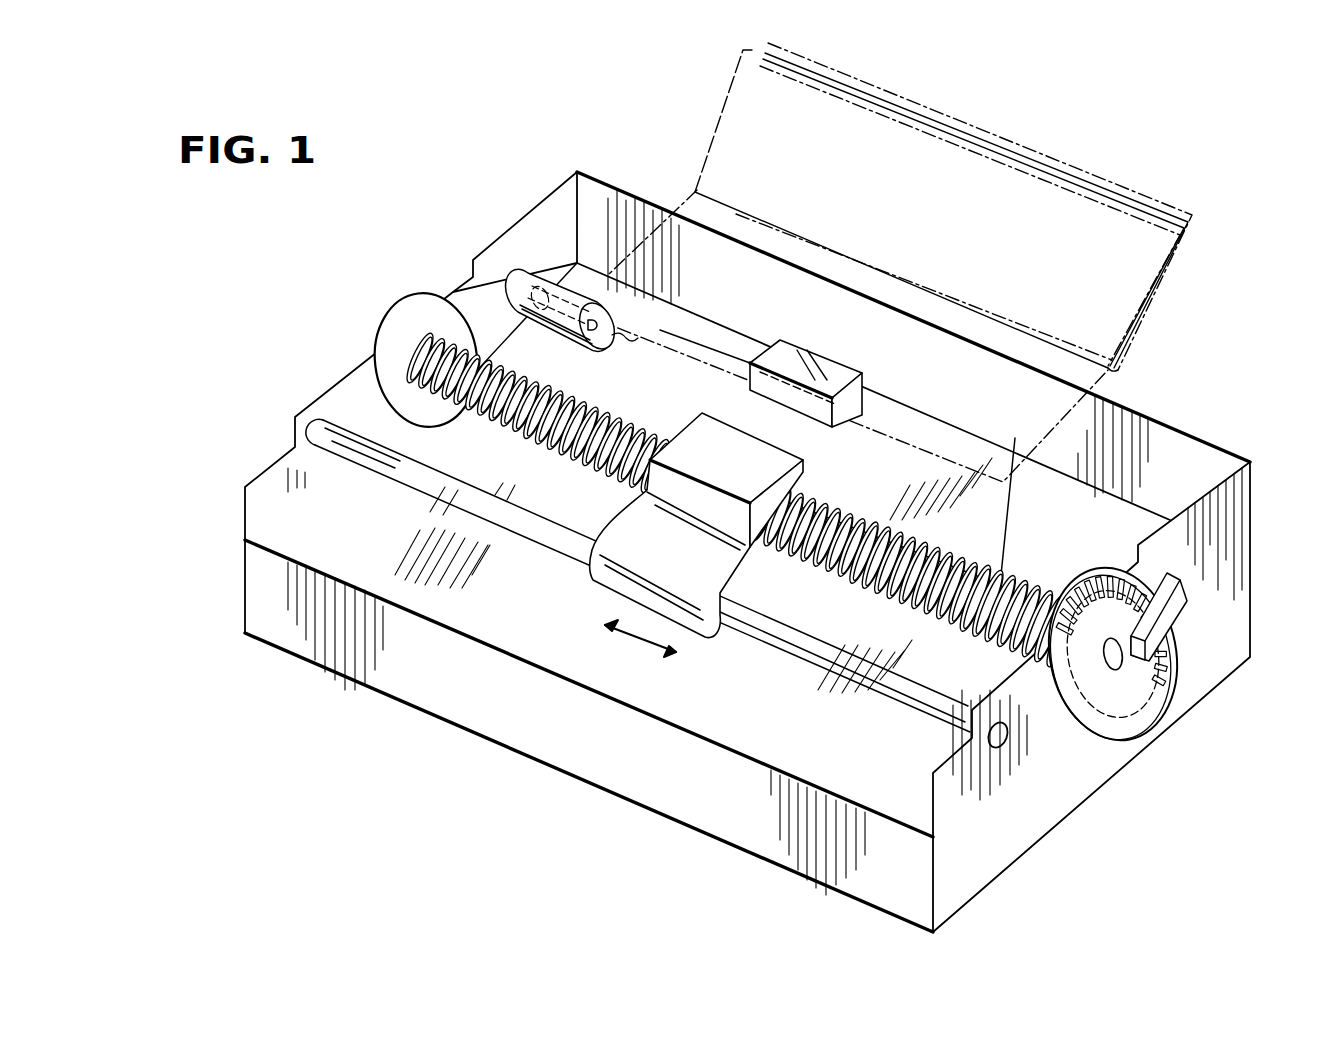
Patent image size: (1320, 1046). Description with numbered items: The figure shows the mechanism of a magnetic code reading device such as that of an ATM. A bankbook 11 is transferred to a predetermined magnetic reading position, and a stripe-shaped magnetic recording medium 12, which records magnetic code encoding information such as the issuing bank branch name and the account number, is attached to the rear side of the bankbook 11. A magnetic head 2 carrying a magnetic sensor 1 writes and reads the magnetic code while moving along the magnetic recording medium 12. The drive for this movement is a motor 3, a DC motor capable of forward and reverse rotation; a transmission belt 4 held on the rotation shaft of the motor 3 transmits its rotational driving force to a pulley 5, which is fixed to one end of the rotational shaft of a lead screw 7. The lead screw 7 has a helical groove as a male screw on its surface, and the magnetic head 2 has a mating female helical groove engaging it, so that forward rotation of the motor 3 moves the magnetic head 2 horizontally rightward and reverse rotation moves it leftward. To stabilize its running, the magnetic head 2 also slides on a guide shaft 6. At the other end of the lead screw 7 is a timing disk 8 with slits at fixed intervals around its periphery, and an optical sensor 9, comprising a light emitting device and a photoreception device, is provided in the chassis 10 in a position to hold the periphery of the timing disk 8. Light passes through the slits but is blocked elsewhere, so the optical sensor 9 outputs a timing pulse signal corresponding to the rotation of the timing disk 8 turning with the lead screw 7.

The magnetic sensor 1 is at (818, 372).
The magnetic head 2 is at (870, 400).
The motor 3 is at (598, 340).
The transmission belt 4 is at (493, 288).
The pulley 5 is at (405, 328).
The guide shaft 6 is at (772, 640).
The lead screw 7 is at (957, 572).
The timing disk 8 is at (1098, 697).
The optical sensor 9 is at (1178, 602).
The chassis 10 is at (1033, 822).
The bankbook 11 is at (1189, 218).
The magnetic recording medium 12 is at (690, 293).